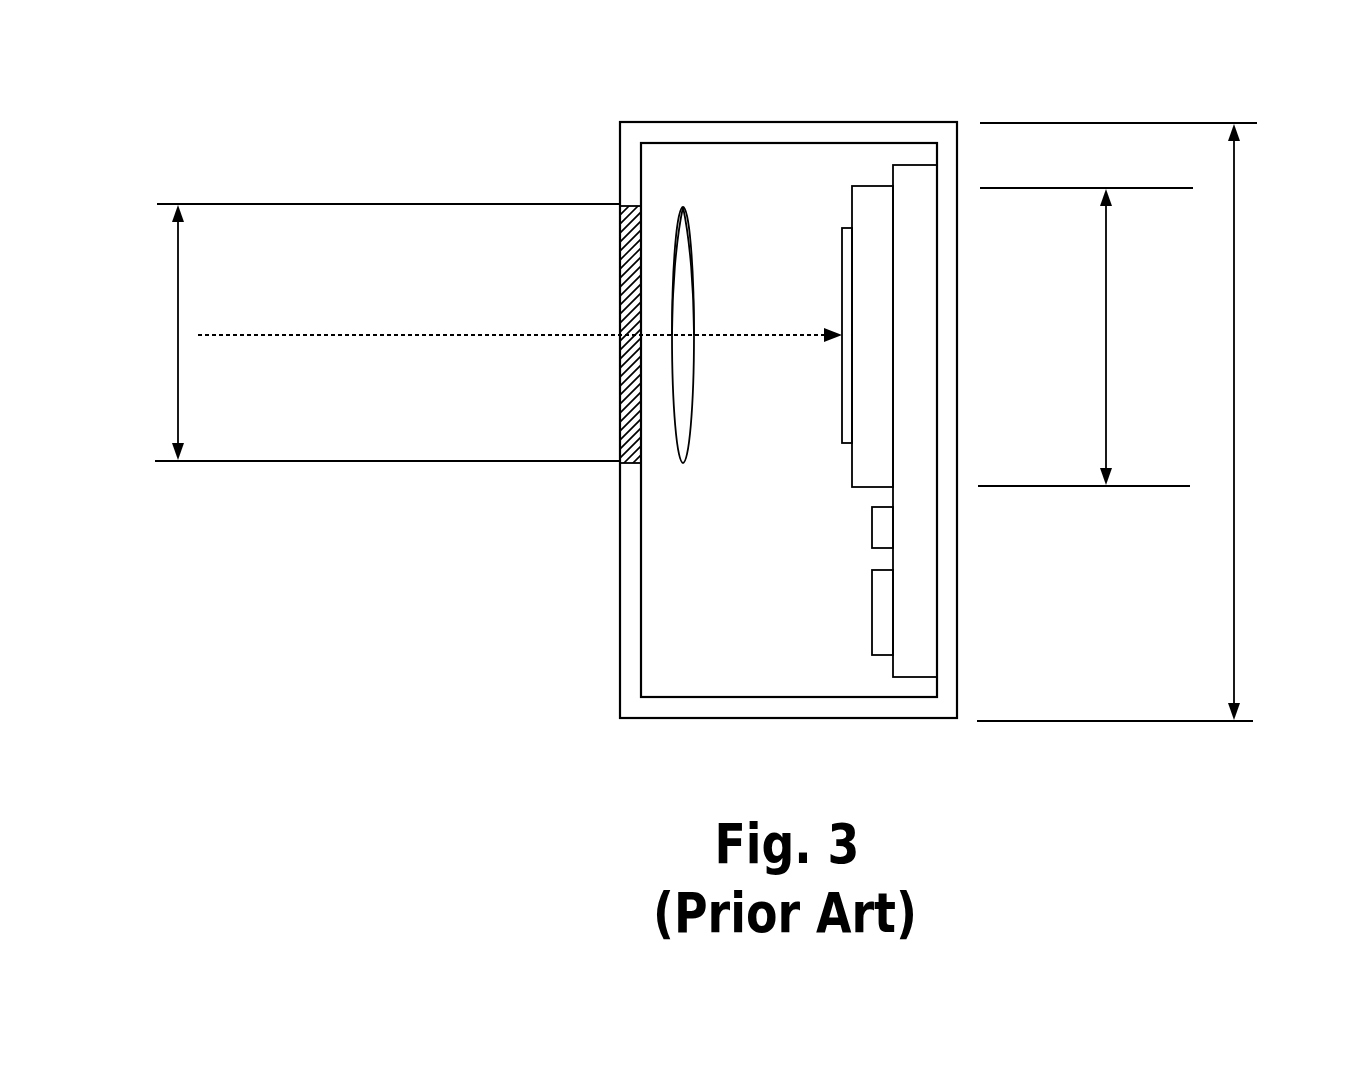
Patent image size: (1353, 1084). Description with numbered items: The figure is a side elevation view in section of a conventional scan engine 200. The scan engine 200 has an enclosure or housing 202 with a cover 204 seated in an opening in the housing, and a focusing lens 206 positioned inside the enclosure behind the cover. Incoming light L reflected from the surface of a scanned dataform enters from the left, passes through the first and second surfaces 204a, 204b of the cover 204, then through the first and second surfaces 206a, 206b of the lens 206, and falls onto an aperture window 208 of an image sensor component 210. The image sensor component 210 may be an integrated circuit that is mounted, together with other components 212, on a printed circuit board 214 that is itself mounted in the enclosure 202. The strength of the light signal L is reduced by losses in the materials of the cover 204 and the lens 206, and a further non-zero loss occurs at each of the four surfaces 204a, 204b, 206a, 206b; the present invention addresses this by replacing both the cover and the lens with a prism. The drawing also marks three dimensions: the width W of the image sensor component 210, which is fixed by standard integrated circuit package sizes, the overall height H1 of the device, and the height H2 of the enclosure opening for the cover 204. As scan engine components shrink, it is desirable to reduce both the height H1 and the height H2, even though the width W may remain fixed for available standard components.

The scan engine 200 is at (1132, 102).
The enclosure or housing 202 is at (933, 719).
The cover 204 is at (630, 400).
The first surface of the cover 204a is at (620, 272).
The second surface of the cover 204b is at (633, 318).
The focusing lens 206 is at (683, 363).
The first surface of the lens 206a is at (676, 270).
The second surface of the lens 206b is at (694, 300).
The aperture window 208 is at (842, 423).
The image sensor component 210 is at (873, 443).
The other components 212 is at (872, 545).
The printed circuit board 214 is at (913, 633).
The incoming light L is at (366, 335).
The overall height H1 is at (1234, 380).
The height of the enclosure opening H2 is at (178, 312).
The width of the image sensor component W is at (1106, 335).